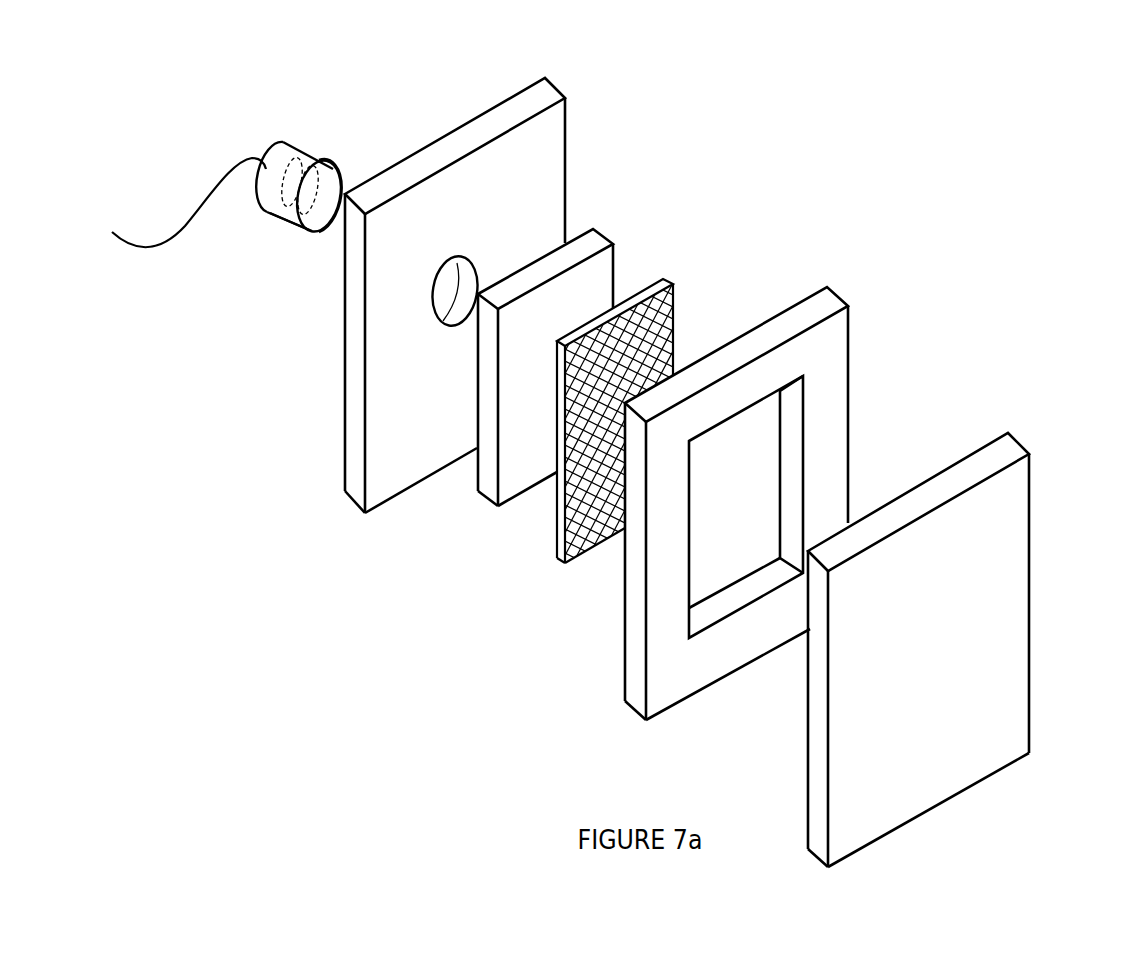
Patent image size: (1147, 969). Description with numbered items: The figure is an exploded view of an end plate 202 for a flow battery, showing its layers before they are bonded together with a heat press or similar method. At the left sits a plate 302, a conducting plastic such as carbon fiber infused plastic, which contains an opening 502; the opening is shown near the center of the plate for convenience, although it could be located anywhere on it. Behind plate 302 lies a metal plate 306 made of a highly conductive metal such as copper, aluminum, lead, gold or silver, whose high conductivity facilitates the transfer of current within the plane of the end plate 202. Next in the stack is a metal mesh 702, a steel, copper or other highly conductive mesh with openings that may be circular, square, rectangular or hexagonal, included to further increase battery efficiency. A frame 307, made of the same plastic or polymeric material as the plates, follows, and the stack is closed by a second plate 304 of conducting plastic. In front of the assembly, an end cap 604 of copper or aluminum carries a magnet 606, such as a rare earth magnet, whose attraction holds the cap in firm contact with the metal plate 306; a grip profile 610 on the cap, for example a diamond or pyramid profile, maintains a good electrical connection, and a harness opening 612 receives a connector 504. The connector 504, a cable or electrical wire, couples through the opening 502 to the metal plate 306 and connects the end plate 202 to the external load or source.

The end plate 202 is at (229, 65).
The plate 302 is at (552, 85).
The plate 304 is at (1023, 452).
The metal plate 306 is at (600, 233).
The frame 307 is at (840, 298).
The metal mesh 702 is at (668, 281).
The opening 502 is at (443, 320).
The connector 504 is at (192, 204).
The end cap 604 is at (303, 186).
The magnet 606 is at (277, 199).
The grip profile 610 is at (313, 213).
The harness opening 612 is at (273, 170).